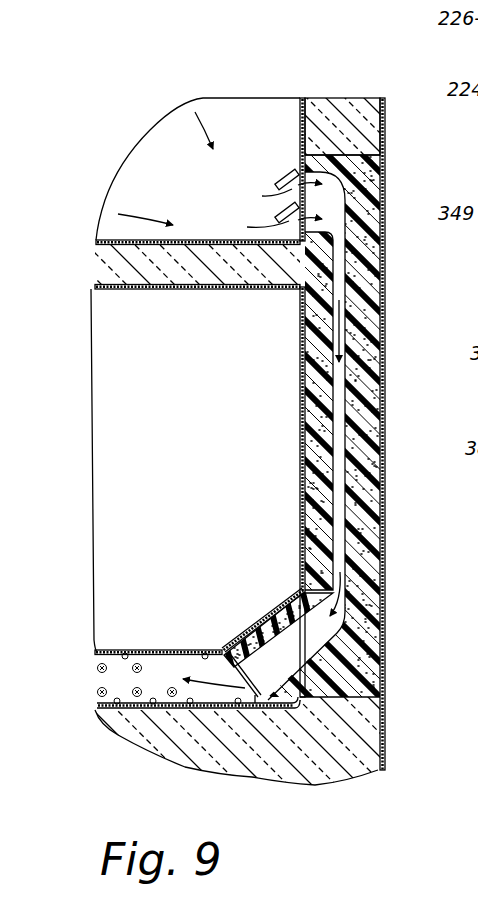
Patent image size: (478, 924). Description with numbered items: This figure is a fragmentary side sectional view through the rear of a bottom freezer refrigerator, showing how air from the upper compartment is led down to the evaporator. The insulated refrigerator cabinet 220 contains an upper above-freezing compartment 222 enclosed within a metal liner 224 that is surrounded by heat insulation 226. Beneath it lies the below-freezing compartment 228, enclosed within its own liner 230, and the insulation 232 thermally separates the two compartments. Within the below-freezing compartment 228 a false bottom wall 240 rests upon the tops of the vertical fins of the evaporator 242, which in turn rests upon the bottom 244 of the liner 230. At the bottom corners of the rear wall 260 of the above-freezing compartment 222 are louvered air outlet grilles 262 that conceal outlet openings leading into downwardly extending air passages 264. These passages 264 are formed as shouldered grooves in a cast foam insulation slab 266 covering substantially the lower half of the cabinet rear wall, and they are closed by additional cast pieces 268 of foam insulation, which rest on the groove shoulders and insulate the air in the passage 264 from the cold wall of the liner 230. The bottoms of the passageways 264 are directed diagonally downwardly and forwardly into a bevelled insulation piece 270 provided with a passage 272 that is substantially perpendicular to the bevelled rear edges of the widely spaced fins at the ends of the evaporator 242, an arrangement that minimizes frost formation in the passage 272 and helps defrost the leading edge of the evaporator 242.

The insulated refrigerator cabinet 220 is at (460, 716).
The upper above-freezing compartment 222 is at (234, 441).
The metal liner 224 is at (115, 241).
The heat insulation 226 is at (333, 98).
The below-freezing compartment 228 is at (163, 418).
The liner 230 is at (108, 293).
The insulation 232 is at (110, 258).
The false bottom wall 240 is at (115, 650).
The evaporator 242 is at (112, 678).
The bottom 244 is at (130, 710).
The rear wall 260 is at (302, 100).
The louvered air outlet grilles 262 is at (277, 214).
The air passages 264 is at (346, 397).
The cast foam insulation slab 266 is at (355, 520).
The cast pieces of foam insulation 268 is at (316, 498).
The bevelled insulation piece 270 is at (277, 615).
The passage 272 is at (262, 673).